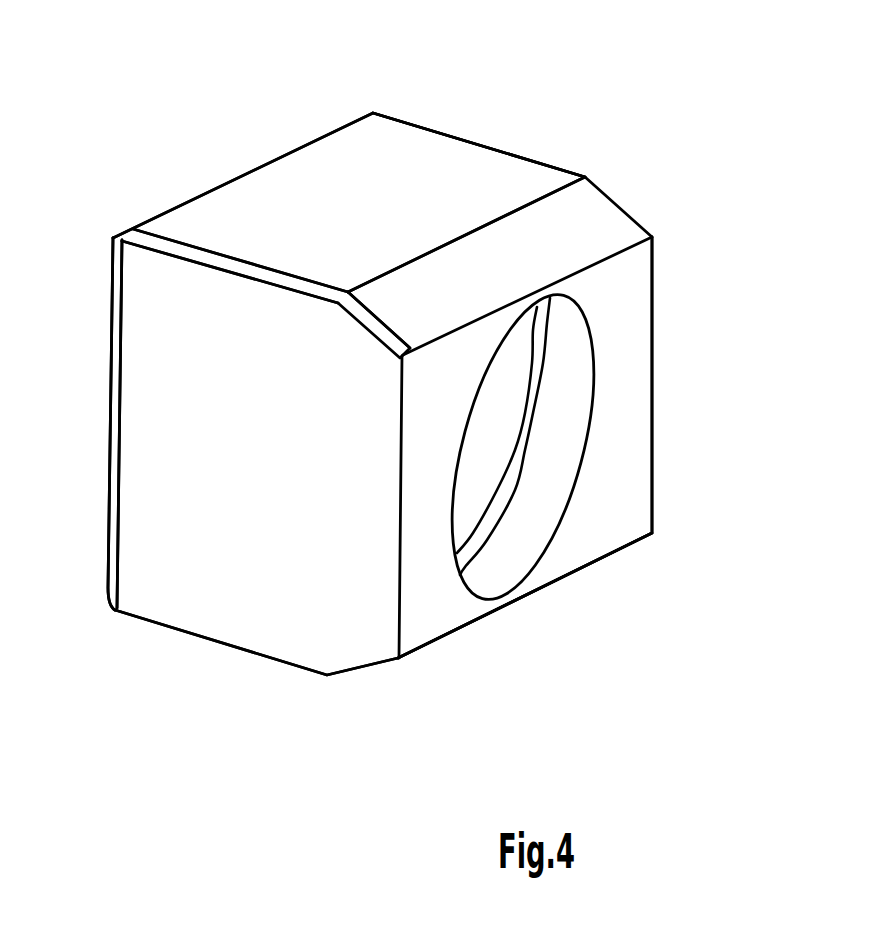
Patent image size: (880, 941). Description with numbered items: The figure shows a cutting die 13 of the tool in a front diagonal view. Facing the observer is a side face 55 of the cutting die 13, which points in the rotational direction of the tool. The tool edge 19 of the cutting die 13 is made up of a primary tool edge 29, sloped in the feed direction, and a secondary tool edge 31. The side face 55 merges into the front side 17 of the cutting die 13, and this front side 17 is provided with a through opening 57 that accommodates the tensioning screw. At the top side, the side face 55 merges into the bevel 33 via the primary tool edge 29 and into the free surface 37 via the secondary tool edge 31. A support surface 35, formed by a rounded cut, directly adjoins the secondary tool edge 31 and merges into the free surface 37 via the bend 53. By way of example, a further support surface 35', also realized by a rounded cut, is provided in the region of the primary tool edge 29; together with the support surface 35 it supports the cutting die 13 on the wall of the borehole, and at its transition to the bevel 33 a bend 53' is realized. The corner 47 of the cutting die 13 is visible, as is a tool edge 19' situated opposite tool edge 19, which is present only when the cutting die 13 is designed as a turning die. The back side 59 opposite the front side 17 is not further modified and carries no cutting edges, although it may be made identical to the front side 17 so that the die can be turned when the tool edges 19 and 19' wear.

The cutting die 13 is at (690, 285).
The front side 17 is at (623, 510).
The tool edge 19 is at (201, 400).
The tool edge 19' is at (572, 595).
The primary tool edge 29 is at (377, 337).
The secondary tool edge 31 is at (235, 275).
The bevel 33 is at (600, 218).
The support surface 35 is at (235, 209).
The support surface 35' is at (456, 224).
The free surface 37 is at (420, 152).
The corner 47 is at (377, 112).
The bend 53 is at (240, 187).
The bend 53' is at (487, 232).
The side face 55 is at (256, 585).
The through opening 57 is at (500, 433).
The back side 59 is at (110, 338).